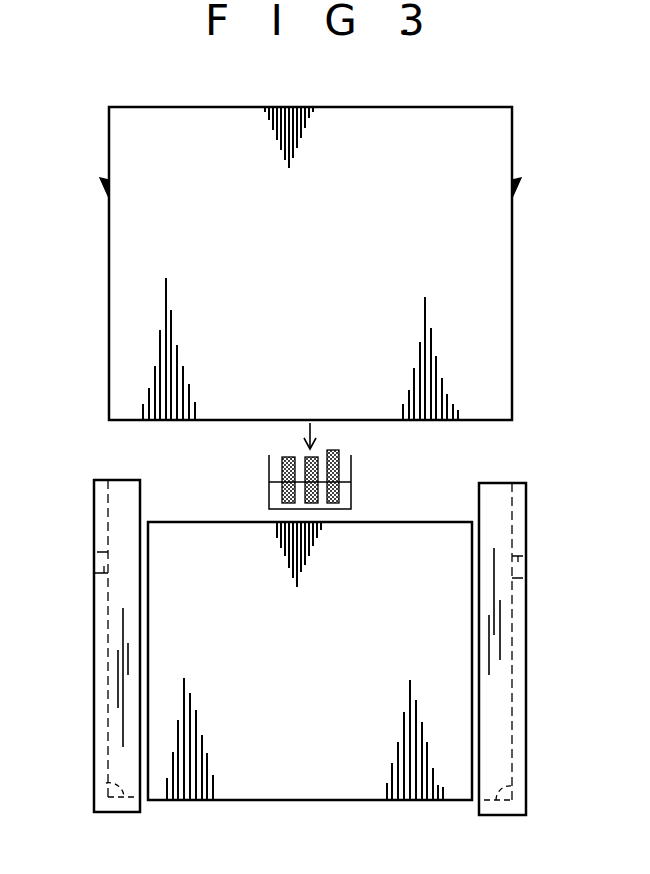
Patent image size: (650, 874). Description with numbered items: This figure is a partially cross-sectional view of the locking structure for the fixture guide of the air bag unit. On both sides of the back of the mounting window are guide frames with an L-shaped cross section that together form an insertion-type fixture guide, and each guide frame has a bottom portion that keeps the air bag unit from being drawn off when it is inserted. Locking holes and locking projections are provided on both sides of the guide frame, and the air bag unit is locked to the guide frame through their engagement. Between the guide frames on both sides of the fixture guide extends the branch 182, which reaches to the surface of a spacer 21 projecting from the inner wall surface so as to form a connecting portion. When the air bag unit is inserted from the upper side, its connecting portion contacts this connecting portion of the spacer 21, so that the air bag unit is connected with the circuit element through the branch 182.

The spacer 21 is at (269, 490).
The branch 182 is at (342, 462).